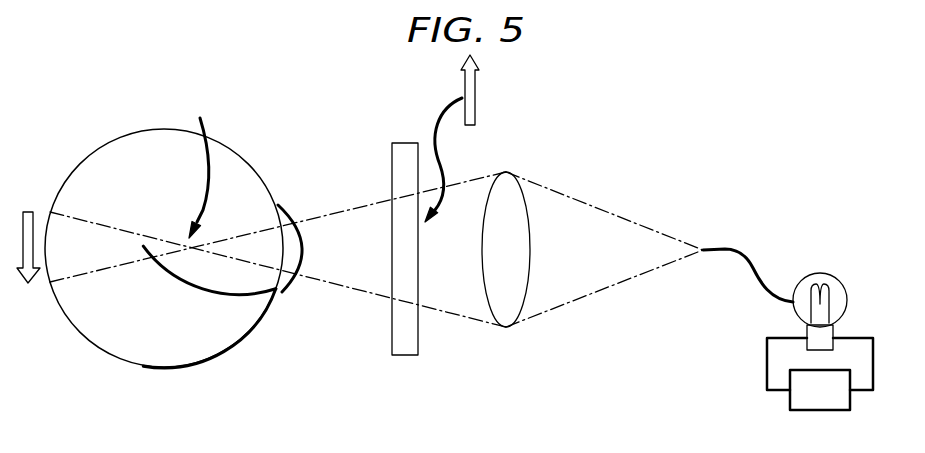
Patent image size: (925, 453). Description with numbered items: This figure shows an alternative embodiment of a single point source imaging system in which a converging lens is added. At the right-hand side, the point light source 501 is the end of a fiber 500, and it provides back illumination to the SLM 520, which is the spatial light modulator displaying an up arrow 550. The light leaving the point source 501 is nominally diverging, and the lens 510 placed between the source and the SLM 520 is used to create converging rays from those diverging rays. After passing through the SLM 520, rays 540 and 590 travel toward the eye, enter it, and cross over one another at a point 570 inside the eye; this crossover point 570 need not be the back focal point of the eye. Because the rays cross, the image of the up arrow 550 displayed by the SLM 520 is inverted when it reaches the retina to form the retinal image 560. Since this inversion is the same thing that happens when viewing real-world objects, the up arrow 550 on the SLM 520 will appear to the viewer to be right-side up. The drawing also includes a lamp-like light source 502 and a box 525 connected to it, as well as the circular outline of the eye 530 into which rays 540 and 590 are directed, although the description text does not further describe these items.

The fiber 500 is at (753, 263).
The point light source 501 is at (703, 250).
The light source lamp 502 is at (845, 280).
The lens 510 is at (507, 172).
The SLM 520 is at (404, 143).
The power supply / controller 525 is at (820, 390).
The eye 530 is at (118, 357).
The ray 540 is at (325, 217).
The up arrow 550 is at (477, 99).
The retinal image 560 is at (28, 212).
The crossover point 570 is at (195, 165).
The ray 590 is at (333, 287).